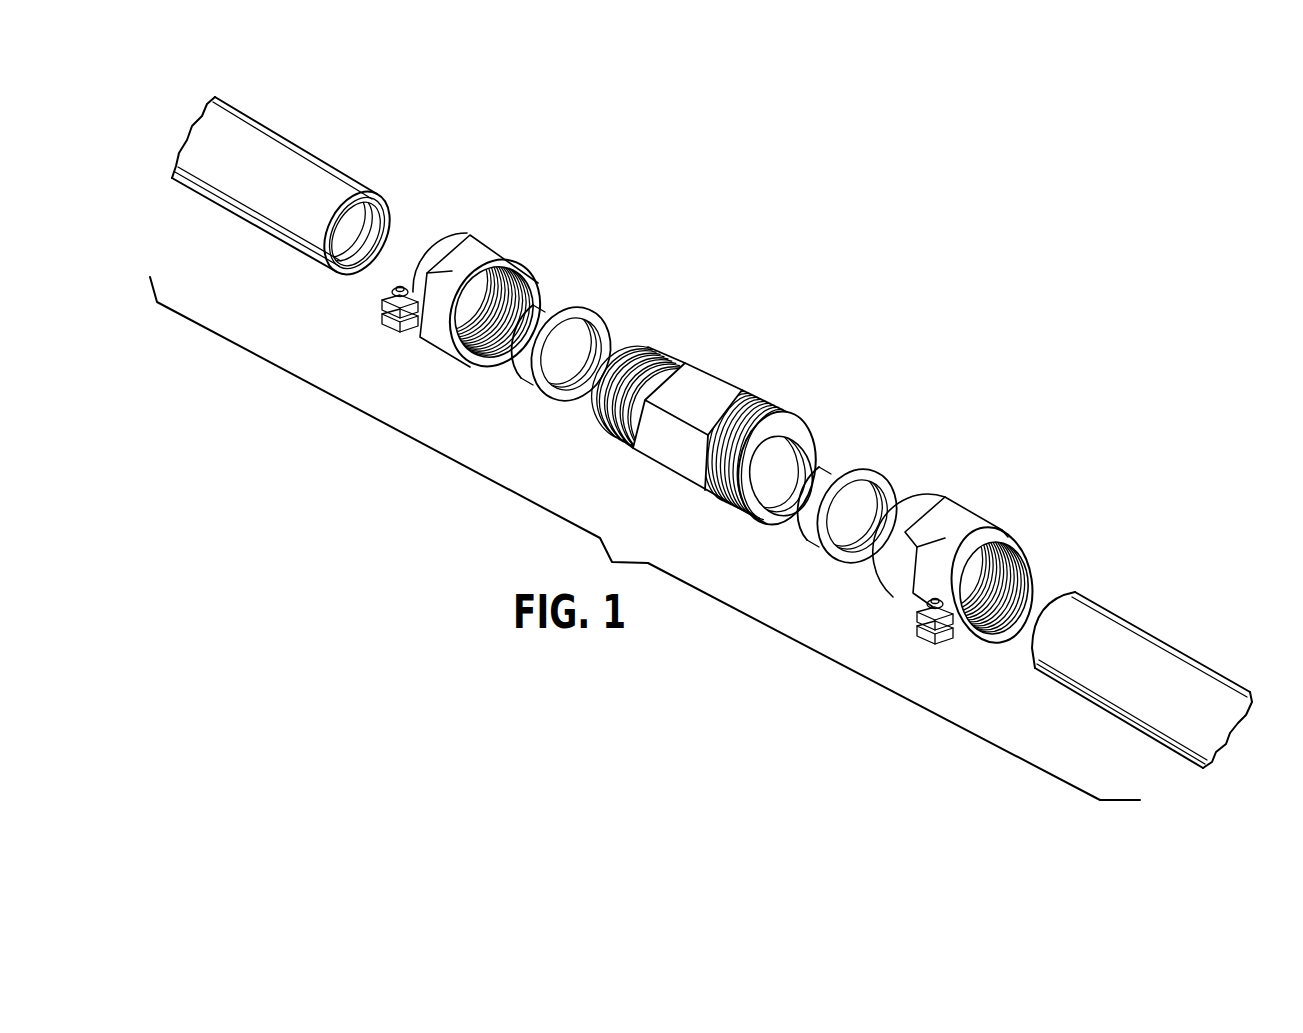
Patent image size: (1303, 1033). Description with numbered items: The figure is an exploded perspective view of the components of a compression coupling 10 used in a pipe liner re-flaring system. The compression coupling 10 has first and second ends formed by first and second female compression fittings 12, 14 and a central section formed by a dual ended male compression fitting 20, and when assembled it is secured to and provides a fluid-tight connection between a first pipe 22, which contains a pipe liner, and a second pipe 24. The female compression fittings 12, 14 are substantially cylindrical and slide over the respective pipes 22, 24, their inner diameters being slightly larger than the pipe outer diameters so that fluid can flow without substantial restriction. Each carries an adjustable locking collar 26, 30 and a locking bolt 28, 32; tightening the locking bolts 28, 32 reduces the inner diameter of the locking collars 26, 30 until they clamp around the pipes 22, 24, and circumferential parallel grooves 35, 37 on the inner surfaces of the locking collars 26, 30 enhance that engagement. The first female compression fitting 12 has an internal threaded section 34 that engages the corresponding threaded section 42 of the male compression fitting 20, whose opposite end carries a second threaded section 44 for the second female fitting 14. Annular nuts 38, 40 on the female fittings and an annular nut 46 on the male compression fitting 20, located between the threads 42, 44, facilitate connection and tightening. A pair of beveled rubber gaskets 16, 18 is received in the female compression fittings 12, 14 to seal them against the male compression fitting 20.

The compression coupling 10 is at (708, 246).
The first female compression fitting 12 is at (443, 255).
The second female compression fitting 14 is at (980, 572).
The beveled rubber gasket 16 is at (598, 270).
The beveled rubber gasket 18 is at (870, 463).
The dual ended male compression fitting 20 is at (692, 425).
The first pipe 22 is at (272, 147).
The second pipe 24 is at (1102, 638).
The first adjustable locking collar 26 is at (457, 225).
The locking bolt 28 is at (392, 290).
The second adjustable locking collar 30 is at (997, 523).
The locking bolt 32 is at (937, 640).
The threaded section 34 is at (547, 270).
The circumferential parallel grooves 35 is at (518, 262).
The circumferential parallel grooves 37 is at (1012, 580).
The annular nut 38 is at (432, 333).
The annular nut 40 is at (900, 597).
The threaded section 42 is at (605, 402).
The threaded section 44 is at (715, 495).
The annular nut 46 is at (660, 455).